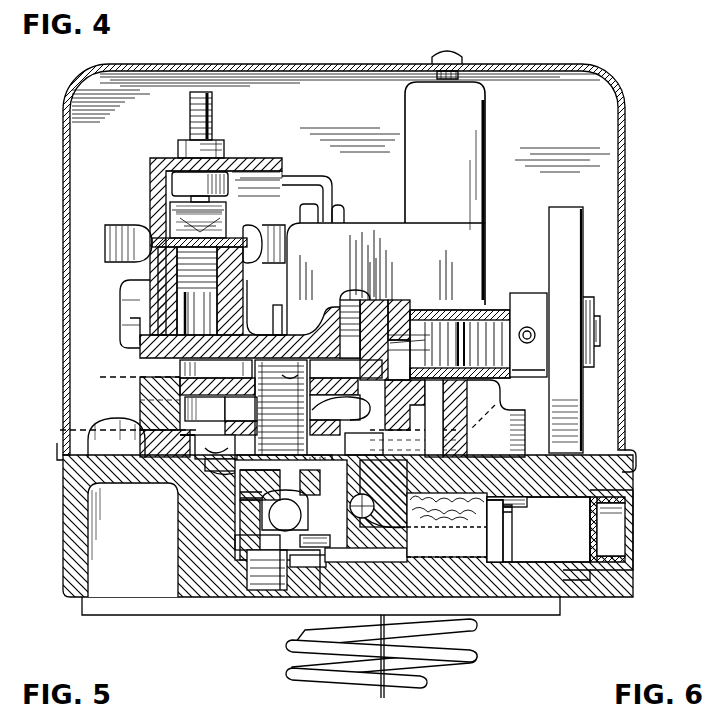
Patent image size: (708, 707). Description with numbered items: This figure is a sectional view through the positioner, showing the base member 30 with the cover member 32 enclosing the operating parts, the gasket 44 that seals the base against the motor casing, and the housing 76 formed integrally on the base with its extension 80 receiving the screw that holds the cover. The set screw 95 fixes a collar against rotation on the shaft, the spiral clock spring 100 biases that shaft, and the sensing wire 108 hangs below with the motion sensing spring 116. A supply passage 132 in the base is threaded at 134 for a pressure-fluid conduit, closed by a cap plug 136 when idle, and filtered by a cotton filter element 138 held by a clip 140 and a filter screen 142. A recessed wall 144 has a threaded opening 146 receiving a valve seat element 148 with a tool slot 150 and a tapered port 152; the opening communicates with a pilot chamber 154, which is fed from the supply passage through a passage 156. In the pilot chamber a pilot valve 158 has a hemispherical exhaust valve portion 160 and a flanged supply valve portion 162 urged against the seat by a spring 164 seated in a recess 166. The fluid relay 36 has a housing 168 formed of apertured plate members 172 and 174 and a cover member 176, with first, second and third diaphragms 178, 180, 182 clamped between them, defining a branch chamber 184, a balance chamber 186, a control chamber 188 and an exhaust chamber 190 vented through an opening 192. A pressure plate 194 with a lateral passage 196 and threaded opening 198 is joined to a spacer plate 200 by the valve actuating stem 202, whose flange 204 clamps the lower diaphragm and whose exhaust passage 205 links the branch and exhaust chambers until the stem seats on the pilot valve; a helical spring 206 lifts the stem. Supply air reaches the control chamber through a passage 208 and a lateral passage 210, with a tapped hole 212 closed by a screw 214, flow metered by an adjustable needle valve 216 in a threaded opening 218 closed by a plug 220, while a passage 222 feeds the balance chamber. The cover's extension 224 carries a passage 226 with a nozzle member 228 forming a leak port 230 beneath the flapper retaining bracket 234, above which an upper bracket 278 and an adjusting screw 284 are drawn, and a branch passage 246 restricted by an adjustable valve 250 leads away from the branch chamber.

The base member 30 is at (65, 523).
The cover member 32 is at (626, 160).
The fluid relay 36 is at (387, 274).
The gasket 44 is at (90, 612).
The housing 76 is at (478, 266).
The extension 80 is at (478, 158).
The set screw 95 is at (529, 327).
The spiral clock spring 100 is at (560, 220).
The sensing wire 108 is at (378, 692).
The motion sensing spring 116 is at (472, 646).
The supply passage 132 is at (538, 529).
The internal threads 134 is at (632, 462).
The cap plug 136 is at (615, 556).
The cotton filter element 138 is at (500, 505).
The liner 140 is at (492, 527).
The filter screen 142 is at (495, 540).
The recessed wall 144 is at (262, 522).
The threaded opening 146 is at (270, 540).
The valve seat element 148 is at (240, 505).
The slot 150 is at (335, 497).
The tapered port 152 is at (245, 494).
The pilot chamber 154 is at (245, 580).
The passage 156 is at (375, 568).
The pilot valve 158 is at (315, 547).
The hemispherical exhaust valve portion 160 is at (240, 560).
The flanged supply valve portion 162 is at (240, 564).
The spring 164 is at (308, 561).
The recess 166 is at (263, 570).
The relay housing 168 is at (140, 340).
The apertured plate member 172 is at (150, 440).
The apertured plate member 174 is at (145, 402).
The cover member 176 is at (287, 322).
The first diaphragm 178 is at (309, 380).
The second diaphragm 180 is at (142, 416).
The third diaphragm 182 is at (130, 446).
The relay branch chamber 184 is at (373, 493).
The balance chamber 186 is at (402, 442).
The control chamber 188 is at (346, 377).
The exhaust chamber 190 is at (205, 409).
The opening 192 is at (144, 377).
The pressure plate 194 is at (216, 369).
The lateral passage 196 is at (340, 415).
The threaded opening 198 is at (281, 410).
The spacer plate 200 is at (236, 450).
The valve actuating stem 202 is at (241, 416).
The flange 204 is at (225, 466).
The exhaust passage 205 is at (284, 463).
The helical spring 206 is at (385, 406).
The passage 208 is at (467, 393).
The lateral passage 210 is at (398, 308).
The tapped hole 212 is at (344, 308).
The screw 214 is at (380, 296).
The adjustable needle valve 216 is at (468, 306).
The threaded opening 218 is at (492, 305).
The threaded plug 220 is at (528, 359).
The passage 222 is at (500, 410).
The extension 224 is at (190, 274).
The passage 226 is at (188, 318).
The nozzle member 228 is at (228, 216).
The leak port 230 is at (228, 200).
The flapper retaining bracket 234 is at (160, 228).
The branch passage 246 is at (447, 525).
The adjustable valve 250 is at (378, 498).
The bracket 278 is at (262, 160).
The adjusting screw 284 is at (212, 113).